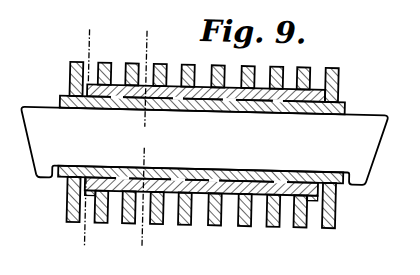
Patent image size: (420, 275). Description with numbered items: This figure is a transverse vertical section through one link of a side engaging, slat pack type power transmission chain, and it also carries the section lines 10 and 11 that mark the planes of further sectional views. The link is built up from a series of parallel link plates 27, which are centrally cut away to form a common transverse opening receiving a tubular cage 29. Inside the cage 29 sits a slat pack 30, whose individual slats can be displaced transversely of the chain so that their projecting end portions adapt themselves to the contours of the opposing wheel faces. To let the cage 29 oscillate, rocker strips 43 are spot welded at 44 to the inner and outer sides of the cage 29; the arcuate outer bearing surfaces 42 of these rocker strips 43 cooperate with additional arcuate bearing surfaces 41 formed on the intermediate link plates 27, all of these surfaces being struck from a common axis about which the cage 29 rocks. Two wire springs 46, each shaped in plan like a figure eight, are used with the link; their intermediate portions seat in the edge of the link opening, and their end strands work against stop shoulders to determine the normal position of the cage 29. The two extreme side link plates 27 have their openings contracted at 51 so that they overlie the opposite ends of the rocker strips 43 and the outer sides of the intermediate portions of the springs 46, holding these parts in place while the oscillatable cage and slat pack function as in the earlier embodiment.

The section line 10- 10 is at (84, 240).
The section line 11- 11 is at (139, 239).
The link plates 27 is at (223, 224).
The cage 29 is at (59, 101).
The slat pack 30 is at (28, 147).
The arcuate bearing surfaces 41 is at (213, 168).
The arcuate outer bearing surfaces 42 is at (216, 66).
The rocker strips 43 is at (262, 86).
The spot welds 44 is at (279, 99).
The spring 46 is at (88, 198).
The contracted portion of opening 51 is at (68, 190).